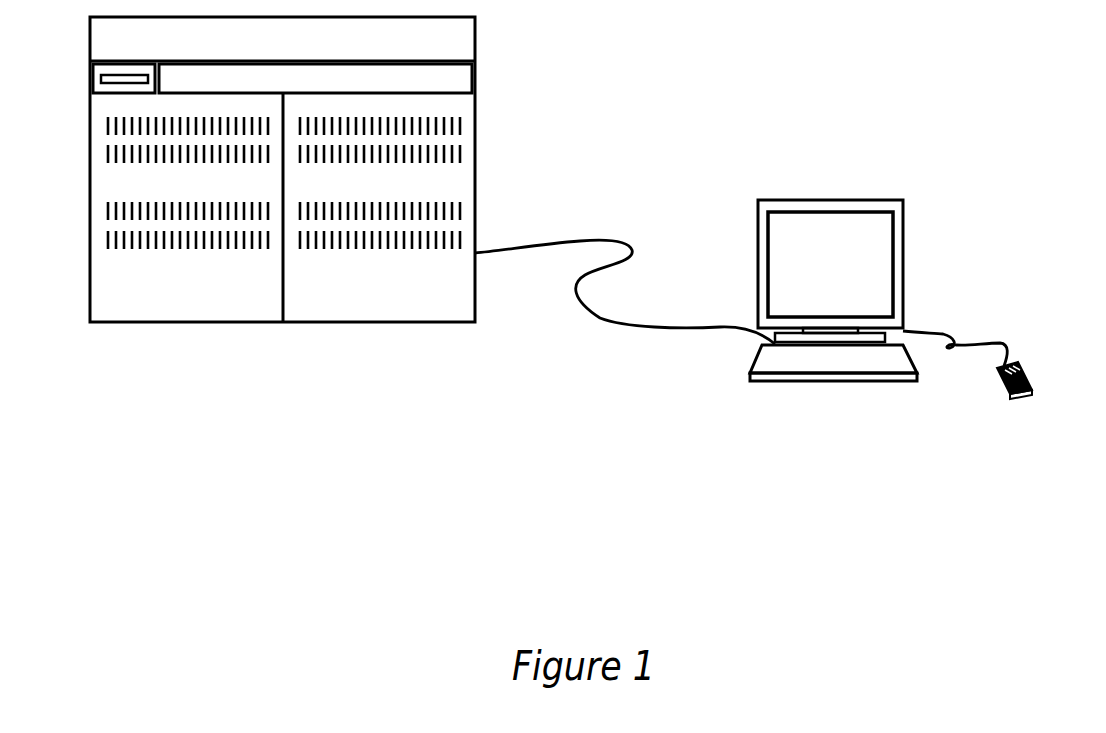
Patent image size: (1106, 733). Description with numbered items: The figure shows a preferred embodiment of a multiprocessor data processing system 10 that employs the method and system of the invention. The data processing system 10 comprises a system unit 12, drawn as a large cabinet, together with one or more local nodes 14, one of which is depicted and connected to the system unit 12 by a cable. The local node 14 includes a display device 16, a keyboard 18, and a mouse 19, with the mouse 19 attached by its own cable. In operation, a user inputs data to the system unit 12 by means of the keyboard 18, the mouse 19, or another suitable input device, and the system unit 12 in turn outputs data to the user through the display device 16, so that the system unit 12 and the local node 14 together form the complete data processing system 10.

The data processing system 10 is at (668, 118).
The system unit 12 is at (475, 126).
The local node 14 is at (910, 326).
The display device 16 is at (883, 262).
The keyboard 18 is at (788, 383).
The mouse 19 is at (1030, 374).